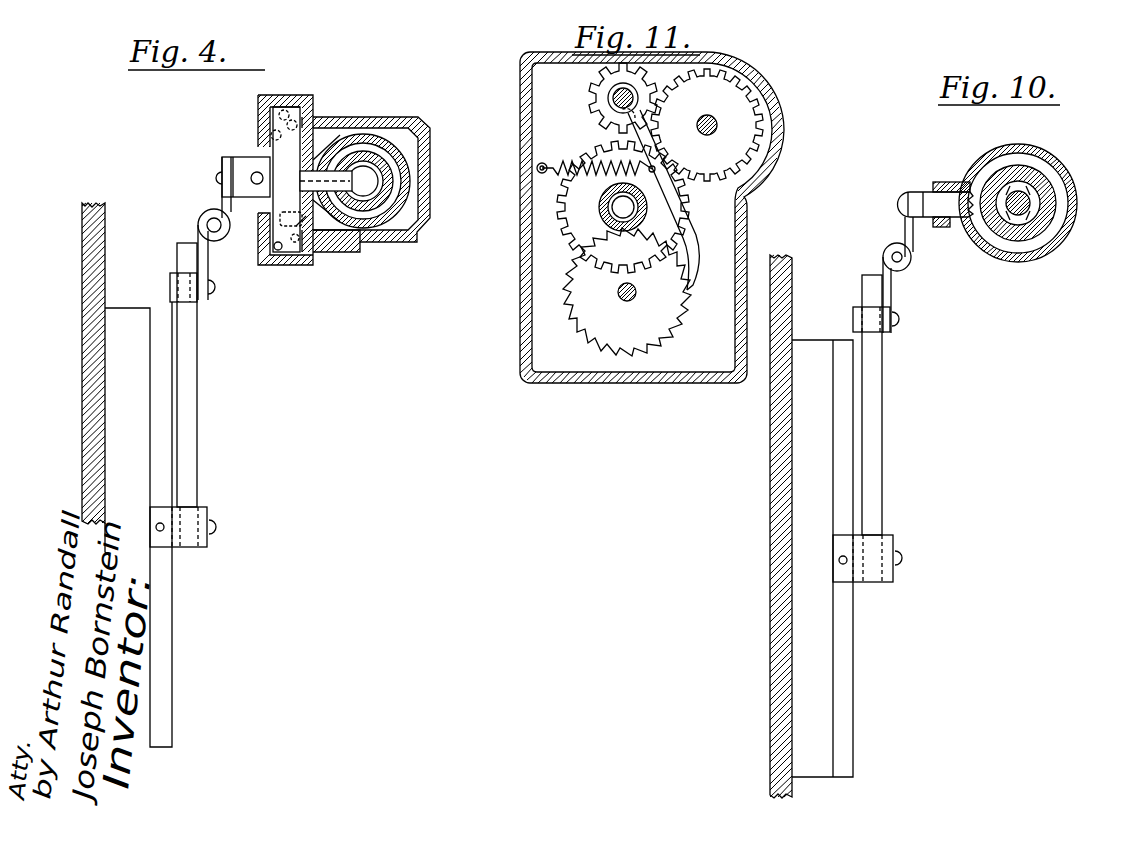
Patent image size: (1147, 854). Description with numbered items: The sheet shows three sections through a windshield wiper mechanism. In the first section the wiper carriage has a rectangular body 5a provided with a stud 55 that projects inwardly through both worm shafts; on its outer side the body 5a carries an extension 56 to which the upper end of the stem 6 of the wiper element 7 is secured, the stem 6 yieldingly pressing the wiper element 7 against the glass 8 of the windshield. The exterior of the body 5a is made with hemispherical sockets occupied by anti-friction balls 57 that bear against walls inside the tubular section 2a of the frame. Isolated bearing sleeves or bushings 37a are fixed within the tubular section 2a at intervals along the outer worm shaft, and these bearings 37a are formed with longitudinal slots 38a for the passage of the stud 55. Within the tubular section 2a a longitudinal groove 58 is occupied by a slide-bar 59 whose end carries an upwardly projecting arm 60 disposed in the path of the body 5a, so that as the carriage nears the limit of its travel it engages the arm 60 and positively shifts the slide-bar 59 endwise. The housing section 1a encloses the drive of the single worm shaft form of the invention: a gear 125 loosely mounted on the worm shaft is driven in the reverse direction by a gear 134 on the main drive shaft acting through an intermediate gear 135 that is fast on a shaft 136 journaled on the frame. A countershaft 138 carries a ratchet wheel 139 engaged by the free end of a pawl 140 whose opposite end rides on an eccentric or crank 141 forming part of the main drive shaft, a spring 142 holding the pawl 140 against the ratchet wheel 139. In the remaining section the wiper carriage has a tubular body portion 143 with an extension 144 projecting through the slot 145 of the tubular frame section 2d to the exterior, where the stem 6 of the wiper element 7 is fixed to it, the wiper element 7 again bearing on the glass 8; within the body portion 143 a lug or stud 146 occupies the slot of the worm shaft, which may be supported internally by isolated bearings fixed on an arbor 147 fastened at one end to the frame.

In FIG. 4, the glass 8 is at (98, 365).
In FIG. 10, the glass 8 is at (777, 515).
In FIG. 4, the wiper element 7 is at (132, 405).
In FIG. 10, the wiper element 7 is at (820, 633).
In FIG. 4, the stem 6 is at (200, 302).
In FIG. 10, the stem 6 is at (883, 335).
In FIG. 4, the extension 56 is at (240, 168).
In FIG. 4, the rectangular body 5a is at (282, 157).
In FIG. 4, the anti-friction balls 57 is at (283, 108).
In FIG. 4, the isolated bearing sleeves 37a is at (397, 128).
In FIG. 4, the longitudinal slots 38a is at (317, 127).
In FIG. 4, the stud 55 is at (363, 120).
In FIG. 4, the longitudinal groove 58 is at (333, 247).
In FIG. 4, the slide-bar 59 is at (320, 252).
In FIG. 4, the arm 60 is at (310, 215).
In FIG. 4, the tubular section 2a is at (397, 242).
In FIG. 11, the casing housing 1a is at (530, 337).
In FIG. 11, the gear 134 is at (643, 80).
In FIG. 11, the eccentric or crank 141 is at (613, 92).
In FIG. 11, the shaft 136 is at (717, 125).
In FIG. 11, the intermediate gear 135 is at (737, 98).
In FIG. 11, the spring 142 is at (593, 176).
In FIG. 11, the gear 125 is at (583, 228).
In FIG. 11, the arbor 147 is at (650, 203).
In FIG. 11, the pawl 140 is at (693, 253).
In FIG. 11, the ratchet wheel 139 is at (628, 330).
In FIG. 11, the countershaft 138 is at (617, 297).
In FIG. 10, the extension 144 is at (955, 205).
In FIG. 10, the slot 145 is at (942, 183).
In FIG. 10, the tubular frame section 2d is at (1047, 257).
In FIG. 10, the tubular body portion 143 is at (1030, 168).
In FIG. 10, the lug or stud 146 is at (1018, 227).